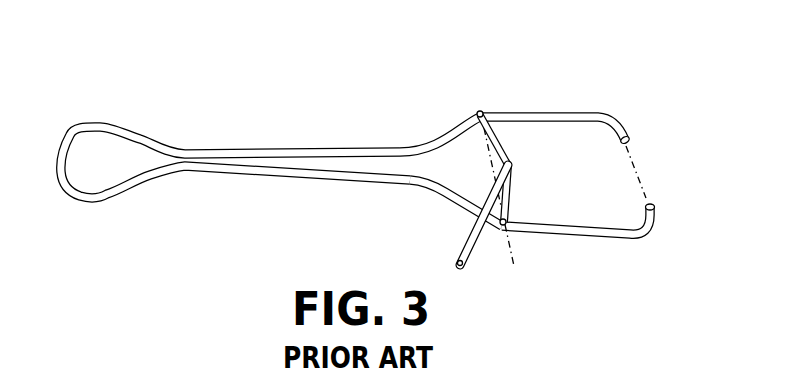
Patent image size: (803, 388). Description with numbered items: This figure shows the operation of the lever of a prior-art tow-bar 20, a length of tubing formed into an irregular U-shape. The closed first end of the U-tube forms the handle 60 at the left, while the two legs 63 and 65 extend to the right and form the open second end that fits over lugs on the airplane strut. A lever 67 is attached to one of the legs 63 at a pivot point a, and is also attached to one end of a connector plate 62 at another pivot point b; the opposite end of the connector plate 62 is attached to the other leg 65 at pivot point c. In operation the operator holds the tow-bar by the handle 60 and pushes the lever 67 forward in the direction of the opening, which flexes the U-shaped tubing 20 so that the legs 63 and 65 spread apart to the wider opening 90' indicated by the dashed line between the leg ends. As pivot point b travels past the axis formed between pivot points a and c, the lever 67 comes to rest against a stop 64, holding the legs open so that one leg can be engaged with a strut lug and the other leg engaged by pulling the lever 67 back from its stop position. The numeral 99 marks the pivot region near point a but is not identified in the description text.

The tow-bar 20 is at (365, 155).
The handle 60 is at (66, 153).
The connector plate 62 is at (502, 203).
The leg 63 is at (628, 131).
The stop 64 is at (527, 180).
The leg 65 is at (657, 212).
The lever 67 is at (463, 252).
The pivot 99 is at (500, 158).
The wider opening 90' is at (658, 172).
The pivot point a is at (486, 111).
The pivot point b is at (513, 162).
The pivot point c is at (510, 221).